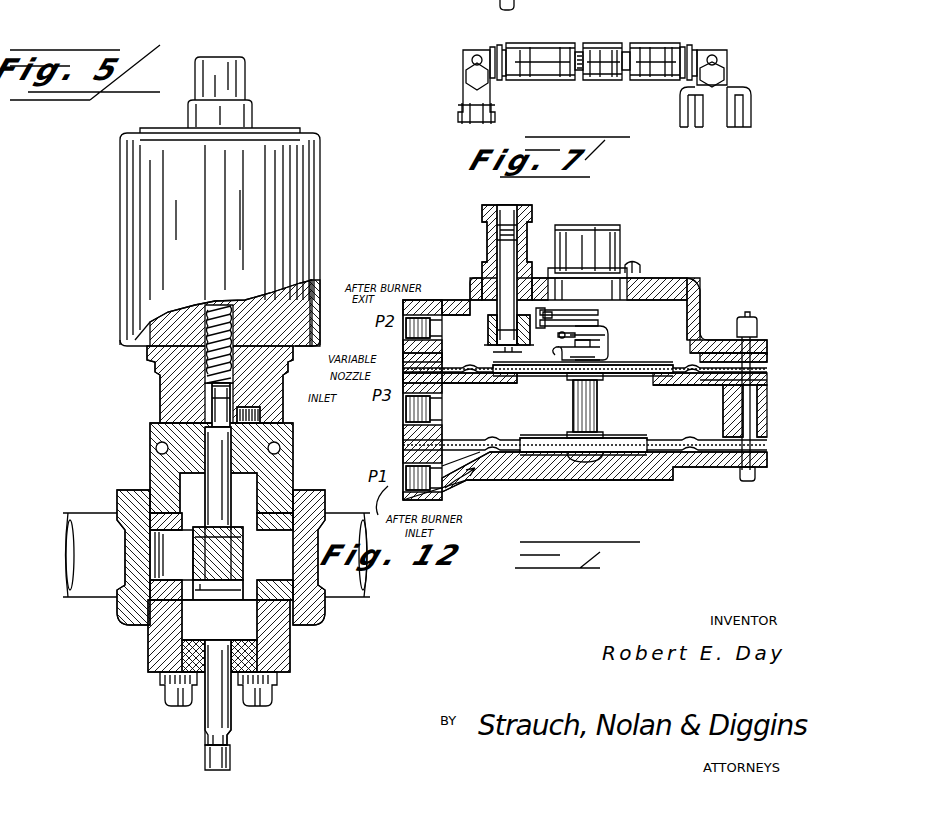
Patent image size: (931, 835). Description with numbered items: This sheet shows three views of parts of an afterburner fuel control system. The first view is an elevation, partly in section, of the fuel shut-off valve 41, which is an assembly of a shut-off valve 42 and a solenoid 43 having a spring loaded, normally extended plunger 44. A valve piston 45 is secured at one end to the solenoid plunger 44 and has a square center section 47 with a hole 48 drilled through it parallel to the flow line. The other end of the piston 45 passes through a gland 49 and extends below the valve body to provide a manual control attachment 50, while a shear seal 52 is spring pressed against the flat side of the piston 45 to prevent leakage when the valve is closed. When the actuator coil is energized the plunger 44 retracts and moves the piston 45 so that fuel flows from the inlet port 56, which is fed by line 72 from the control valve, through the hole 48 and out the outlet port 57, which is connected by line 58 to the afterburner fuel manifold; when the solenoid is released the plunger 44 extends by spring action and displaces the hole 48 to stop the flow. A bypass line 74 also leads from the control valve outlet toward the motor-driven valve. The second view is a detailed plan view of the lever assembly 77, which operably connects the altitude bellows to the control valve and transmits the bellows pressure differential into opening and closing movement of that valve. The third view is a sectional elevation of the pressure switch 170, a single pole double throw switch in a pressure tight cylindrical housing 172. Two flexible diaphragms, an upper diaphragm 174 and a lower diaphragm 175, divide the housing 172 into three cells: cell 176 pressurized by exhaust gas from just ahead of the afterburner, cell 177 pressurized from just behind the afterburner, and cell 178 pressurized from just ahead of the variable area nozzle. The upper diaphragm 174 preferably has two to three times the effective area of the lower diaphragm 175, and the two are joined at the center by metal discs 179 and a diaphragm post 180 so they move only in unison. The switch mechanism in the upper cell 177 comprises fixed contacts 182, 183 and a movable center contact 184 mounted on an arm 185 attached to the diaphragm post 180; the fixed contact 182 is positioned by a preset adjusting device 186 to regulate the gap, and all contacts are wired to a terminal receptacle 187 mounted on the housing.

In FIG. 5, the shut-off valve 41 is at (122, 333).
In FIG. 5, the shut-off valve 42 is at (290, 463).
In FIG. 5, the solenoid 43 is at (313, 250).
In FIG. 5, the solenoid plunger 44 is at (170, 395).
In FIG. 5, the valve piston 45 is at (212, 466).
In FIG. 5, the square center section 47 is at (240, 556).
In FIG. 5, the hole 48 is at (232, 617).
In FIG. 5, the gland 49 is at (185, 655).
In FIG. 5, the manual control attachment 50 is at (229, 752).
In FIG. 5, the shear seal 52 is at (171, 555).
In FIG. 5, the inlet port 56 is at (140, 570).
In FIG. 5, the outlet port 57 is at (315, 585).
In FIG. 5, the line 58 is at (356, 560).
In FIG. 5, the line 72 is at (97, 518).
In FIG. 7, the bypass line 74 is at (488, 12).
In FIG. 7, the lever assembly 77 is at (616, 88).
In FIG. 12, the pressure switch 170 is at (713, 329).
In FIG. 12, the housing 172 is at (628, 482).
In FIG. 12, the upper diaphragm 174 is at (700, 386).
In FIG. 12, the lower diaphragm 175 is at (655, 438).
In FIG. 12, the cell 176 is at (505, 455).
In FIG. 12, the cell 177 is at (475, 348).
In FIG. 12, the cell 178 is at (440, 410).
In FIG. 12, the metal discs 179 is at (548, 394).
In FIG. 12, the diaphragm post 180 is at (598, 410).
In FIG. 12, the fixed contact 182 is at (590, 324).
In FIG. 12, the fixed contact 183 is at (607, 355).
In FIG. 12, the movable center contact 184 is at (606, 335).
In FIG. 12, the arm 185 is at (603, 373).
In FIG. 12, the adjusting device 186 is at (470, 226).
In FIG. 12, the terminal receptacle 187 is at (630, 256).